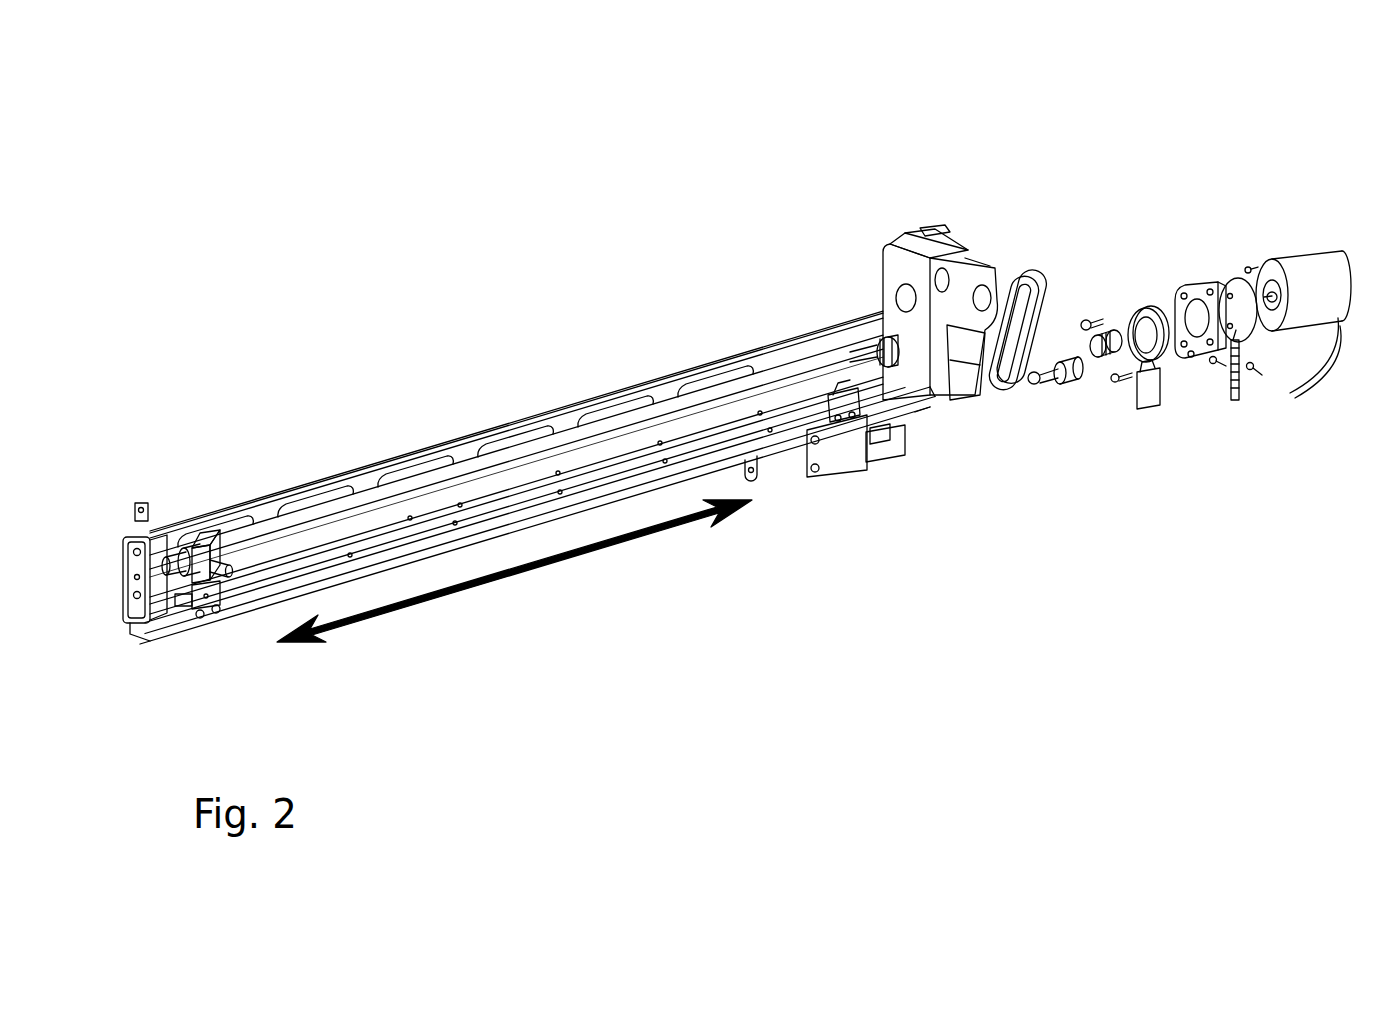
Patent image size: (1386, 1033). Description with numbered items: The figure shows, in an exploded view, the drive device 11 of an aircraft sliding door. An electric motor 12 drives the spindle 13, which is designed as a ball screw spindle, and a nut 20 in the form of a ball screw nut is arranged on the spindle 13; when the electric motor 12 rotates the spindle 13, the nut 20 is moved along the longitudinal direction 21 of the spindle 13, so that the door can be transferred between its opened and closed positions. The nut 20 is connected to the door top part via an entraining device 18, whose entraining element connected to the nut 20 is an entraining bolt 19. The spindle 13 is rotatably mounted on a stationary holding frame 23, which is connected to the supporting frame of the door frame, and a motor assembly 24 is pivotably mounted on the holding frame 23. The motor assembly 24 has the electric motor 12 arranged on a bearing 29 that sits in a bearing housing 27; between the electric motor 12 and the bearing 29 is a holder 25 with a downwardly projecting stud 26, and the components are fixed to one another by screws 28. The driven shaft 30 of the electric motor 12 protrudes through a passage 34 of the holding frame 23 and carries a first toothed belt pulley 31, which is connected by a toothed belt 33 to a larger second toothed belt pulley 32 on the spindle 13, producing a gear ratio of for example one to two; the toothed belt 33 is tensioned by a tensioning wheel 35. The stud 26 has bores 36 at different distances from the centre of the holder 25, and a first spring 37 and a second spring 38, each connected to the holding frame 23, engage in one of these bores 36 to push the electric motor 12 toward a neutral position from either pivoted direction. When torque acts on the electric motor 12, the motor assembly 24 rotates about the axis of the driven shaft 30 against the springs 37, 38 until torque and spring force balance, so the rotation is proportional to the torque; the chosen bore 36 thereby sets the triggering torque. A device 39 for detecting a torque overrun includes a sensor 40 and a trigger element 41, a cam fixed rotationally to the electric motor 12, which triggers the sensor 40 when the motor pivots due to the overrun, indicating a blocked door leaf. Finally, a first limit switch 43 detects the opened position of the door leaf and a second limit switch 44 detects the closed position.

The drive device 11 is at (235, 133).
The electric motor 12 is at (1316, 296).
The spindle 13 is at (515, 462).
The entraining device 18 is at (248, 427).
The entraining bolt 19 is at (228, 573).
The nut 20 is at (183, 556).
The longitudinal direction 21 is at (493, 585).
The holding frame 23 is at (921, 251).
The motor assembly 24 is at (1066, 676).
The holder 25 is at (1227, 283).
The stud 26 is at (1234, 345).
The bearing housing 27 is at (1193, 293).
The screws 28 is at (1270, 332).
The bearing 29 is at (1127, 332).
The driven shaft 30 is at (1262, 298).
The first toothed belt pulley 31 is at (1098, 353).
The second toothed belt pulley 32 is at (1020, 322).
The toothed belt 33 is at (875, 348).
The passage 34 is at (905, 293).
The tensioning wheel 35 is at (1060, 382).
The bores 36 is at (1240, 375).
The first spring 37 is at (1220, 363).
The second spring 38 is at (1253, 368).
The device for detecting a torque overrun 39 is at (1112, 188).
The sensor 40 is at (1147, 397).
The trigger element 41 is at (1190, 357).
The first limit switch 43 is at (842, 413).
The second limit switch 44 is at (205, 597).